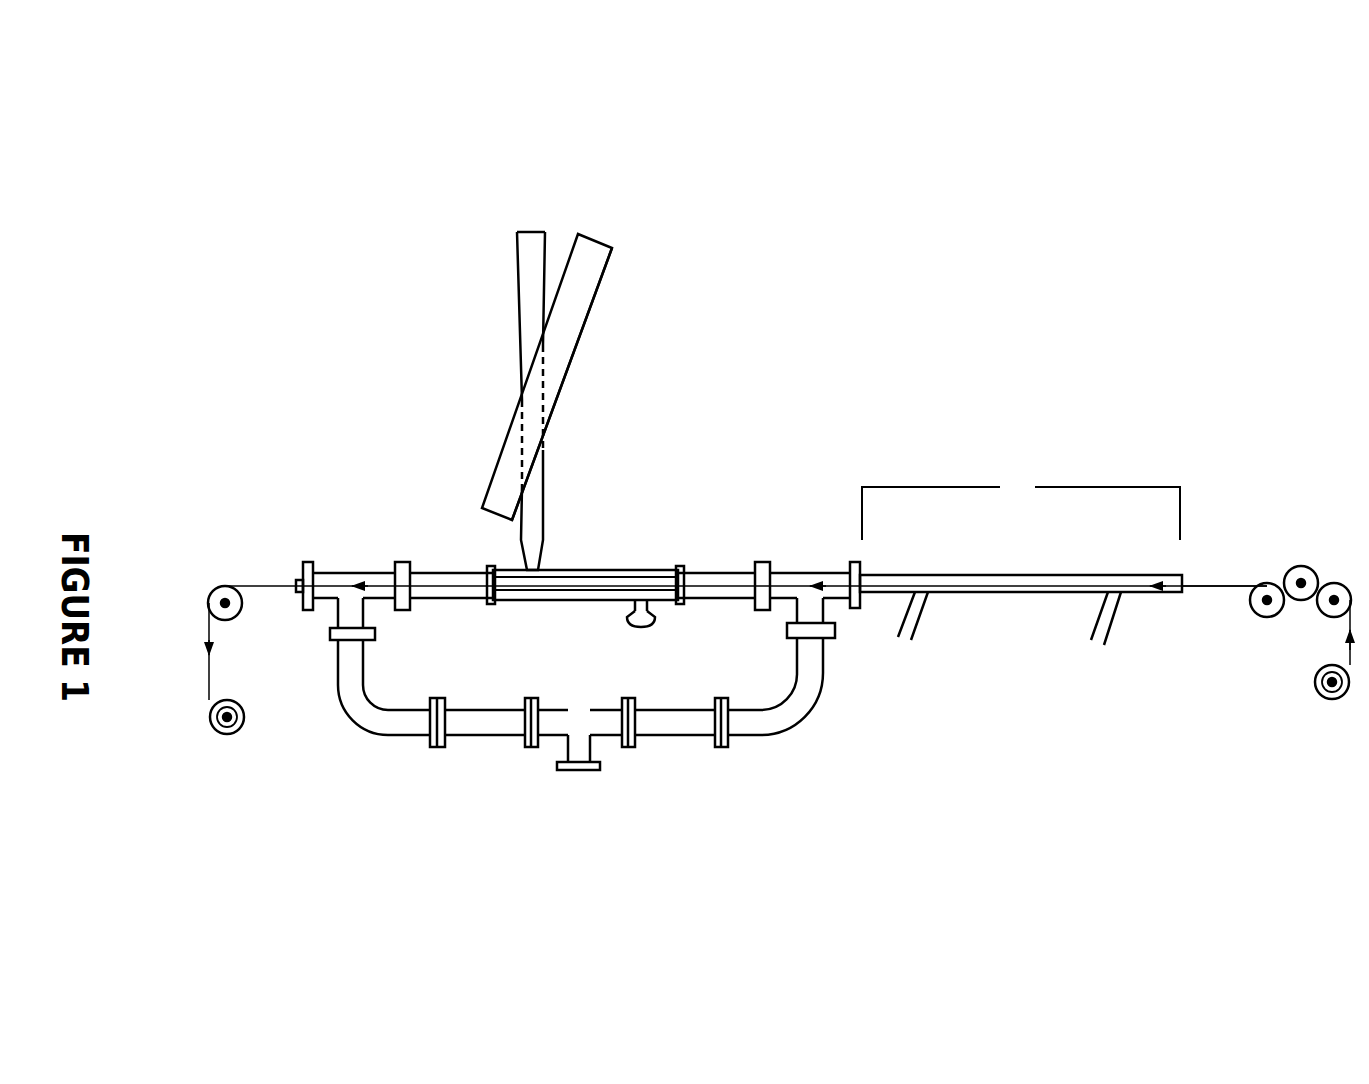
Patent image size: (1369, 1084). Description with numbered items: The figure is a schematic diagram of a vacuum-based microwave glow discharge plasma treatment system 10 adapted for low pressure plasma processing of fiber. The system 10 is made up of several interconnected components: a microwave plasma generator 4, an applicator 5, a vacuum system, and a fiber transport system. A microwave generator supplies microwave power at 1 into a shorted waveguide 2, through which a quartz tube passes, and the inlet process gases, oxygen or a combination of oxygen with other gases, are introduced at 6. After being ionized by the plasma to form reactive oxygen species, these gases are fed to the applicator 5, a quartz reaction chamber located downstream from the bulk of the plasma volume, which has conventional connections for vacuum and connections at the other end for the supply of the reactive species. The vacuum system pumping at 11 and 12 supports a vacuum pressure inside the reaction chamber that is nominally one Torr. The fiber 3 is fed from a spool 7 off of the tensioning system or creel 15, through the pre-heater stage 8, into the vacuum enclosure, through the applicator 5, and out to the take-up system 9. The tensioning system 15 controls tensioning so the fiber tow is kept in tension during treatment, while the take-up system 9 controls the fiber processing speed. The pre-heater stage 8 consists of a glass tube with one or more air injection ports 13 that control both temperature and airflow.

The microwave power supply point 1 is at (597, 236).
The shorted waveguide 2 is at (588, 325).
The fiber 3 is at (240, 582).
The microwave plasma generator 4 is at (546, 462).
The applicator 5 is at (575, 604).
The inlet process gas introduction point 6 is at (527, 226).
The spool 7 is at (1318, 704).
The pre-heater stage 8 is at (1021, 530).
The take-up system 9 is at (210, 732).
The vacuum-based microwave glow discharge plasma treatment system 10 is at (315, 318).
The vacuum system pumping connection 11 is at (640, 614).
The vacuum system pumping connection 12 is at (577, 772).
The air injection ports 13 is at (902, 643).
The tensioning system (creel) 15 is at (1320, 566).